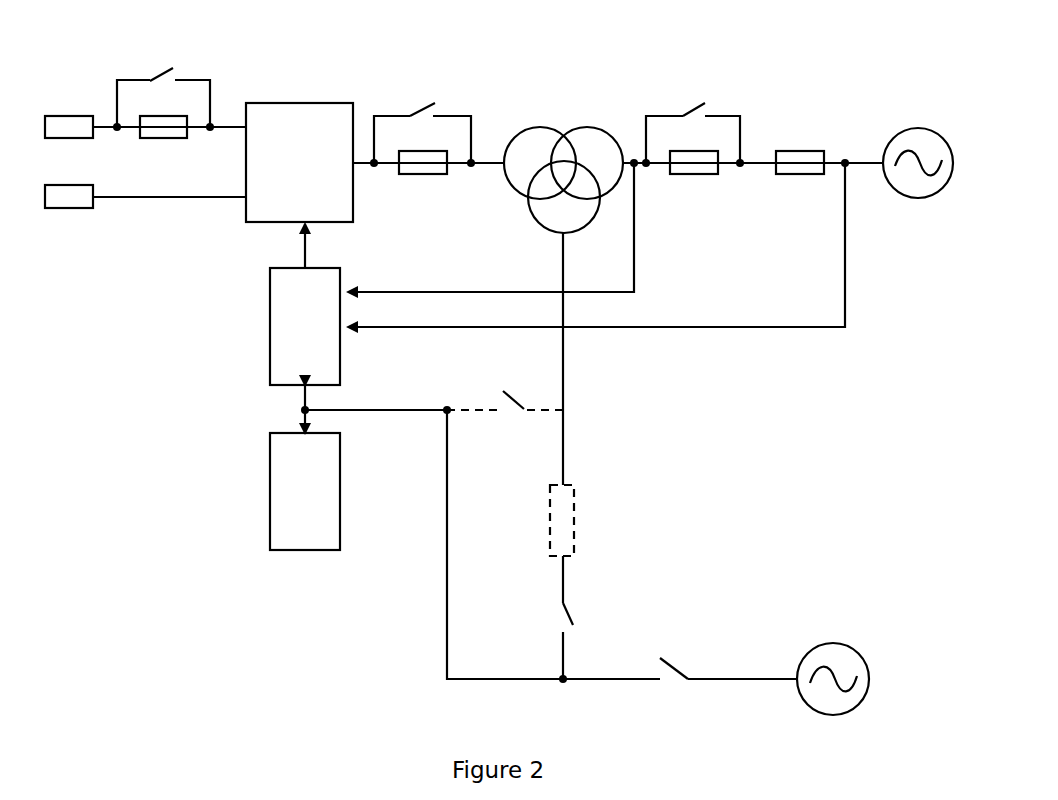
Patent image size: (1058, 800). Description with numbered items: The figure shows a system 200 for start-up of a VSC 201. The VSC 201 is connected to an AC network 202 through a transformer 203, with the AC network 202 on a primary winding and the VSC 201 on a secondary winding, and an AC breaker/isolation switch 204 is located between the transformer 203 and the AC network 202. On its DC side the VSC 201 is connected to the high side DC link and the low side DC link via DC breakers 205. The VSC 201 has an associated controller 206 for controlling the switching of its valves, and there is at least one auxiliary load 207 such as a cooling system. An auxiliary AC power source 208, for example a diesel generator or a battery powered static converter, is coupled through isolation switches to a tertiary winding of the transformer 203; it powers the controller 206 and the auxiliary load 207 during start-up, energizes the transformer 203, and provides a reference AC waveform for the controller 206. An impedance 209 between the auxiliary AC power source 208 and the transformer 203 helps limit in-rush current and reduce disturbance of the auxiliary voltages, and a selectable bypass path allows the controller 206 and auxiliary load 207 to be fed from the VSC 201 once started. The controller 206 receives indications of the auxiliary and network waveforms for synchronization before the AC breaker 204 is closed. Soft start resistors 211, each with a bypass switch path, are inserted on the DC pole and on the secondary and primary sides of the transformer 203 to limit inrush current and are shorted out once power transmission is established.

The system for start-up of a VSC 200 is at (647, 76).
The VSC 201 is at (299, 162).
The AC network 202 is at (910, 127).
The transformer 203 is at (573, 125).
The AC breaker/isolation switch 204 is at (810, 149).
The DC breakers 205 is at (82, 113).
The controller 206 is at (305, 326).
The auxiliary load 207 is at (305, 491).
The auxiliary AC power source 208 is at (823, 642).
The impedance 209 is at (576, 521).
The soft start resistor 211 is at (148, 139).